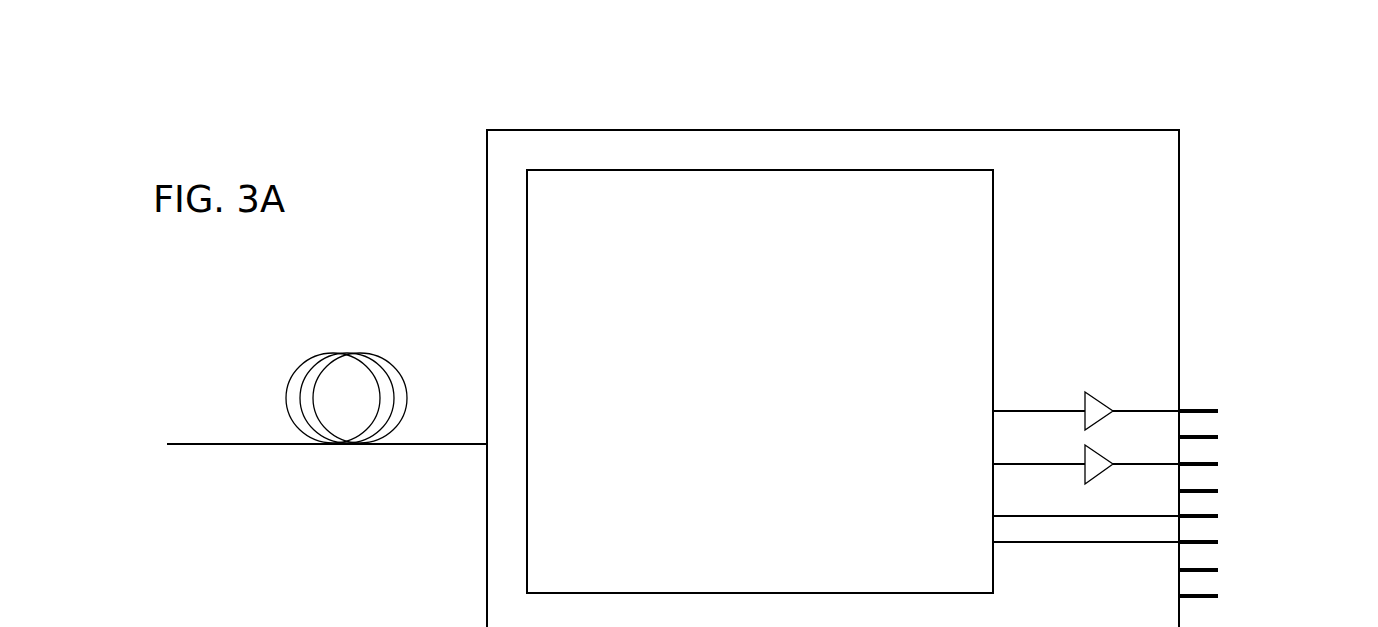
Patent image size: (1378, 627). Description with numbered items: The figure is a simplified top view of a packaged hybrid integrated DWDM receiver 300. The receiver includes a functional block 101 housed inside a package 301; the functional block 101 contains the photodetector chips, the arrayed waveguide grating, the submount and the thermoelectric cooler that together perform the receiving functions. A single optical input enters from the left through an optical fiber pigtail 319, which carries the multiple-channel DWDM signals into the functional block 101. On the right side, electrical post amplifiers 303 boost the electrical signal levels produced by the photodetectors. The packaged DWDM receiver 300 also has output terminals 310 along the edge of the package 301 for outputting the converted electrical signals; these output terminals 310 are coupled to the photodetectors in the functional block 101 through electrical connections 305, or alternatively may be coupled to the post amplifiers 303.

The packaged DWDM receiver 300 is at (1231, 89).
The functional block 101 is at (783, 343).
The optical fiber pigtail 319 is at (342, 352).
The package 301 is at (1180, 310).
The electrical post amplifiers 303 is at (1093, 393).
The electrical connections 305 is at (1090, 544).
The output terminals 310 is at (1231, 459).